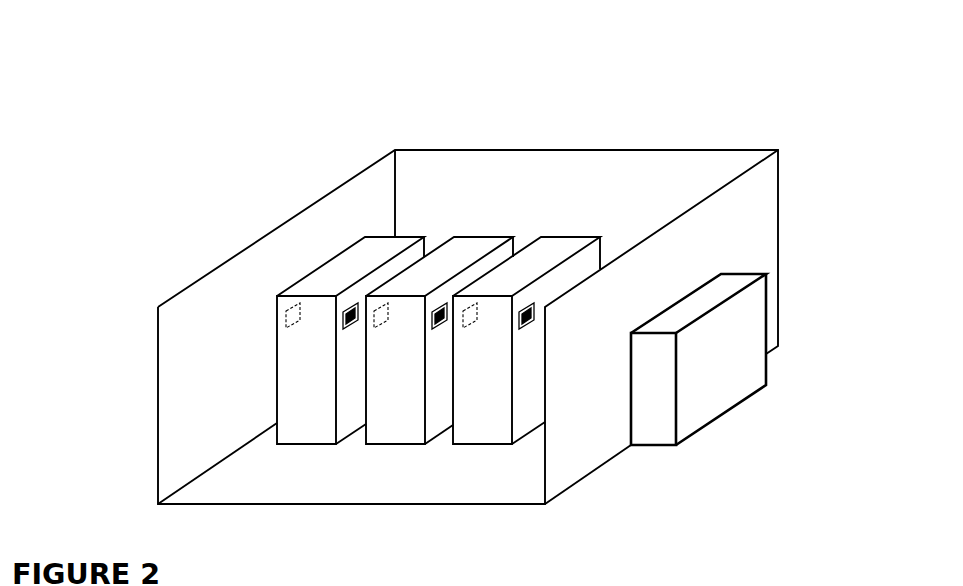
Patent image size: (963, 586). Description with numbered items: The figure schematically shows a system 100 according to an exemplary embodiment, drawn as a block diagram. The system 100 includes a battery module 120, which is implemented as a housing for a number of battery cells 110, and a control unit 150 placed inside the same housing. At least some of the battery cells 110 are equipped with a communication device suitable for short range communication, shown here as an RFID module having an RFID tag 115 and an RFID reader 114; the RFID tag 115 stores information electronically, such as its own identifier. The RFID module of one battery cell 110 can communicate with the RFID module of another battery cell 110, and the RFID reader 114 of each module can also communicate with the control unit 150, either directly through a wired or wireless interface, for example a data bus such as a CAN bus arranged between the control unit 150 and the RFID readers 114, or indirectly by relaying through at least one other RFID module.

The system 100 is at (699, 100).
The battery cell 110 is at (305, 438).
The RFID reader 114 is at (288, 322).
The RFID tag 115 is at (343, 322).
The battery module 120 is at (780, 212).
The control unit 150 is at (723, 415).